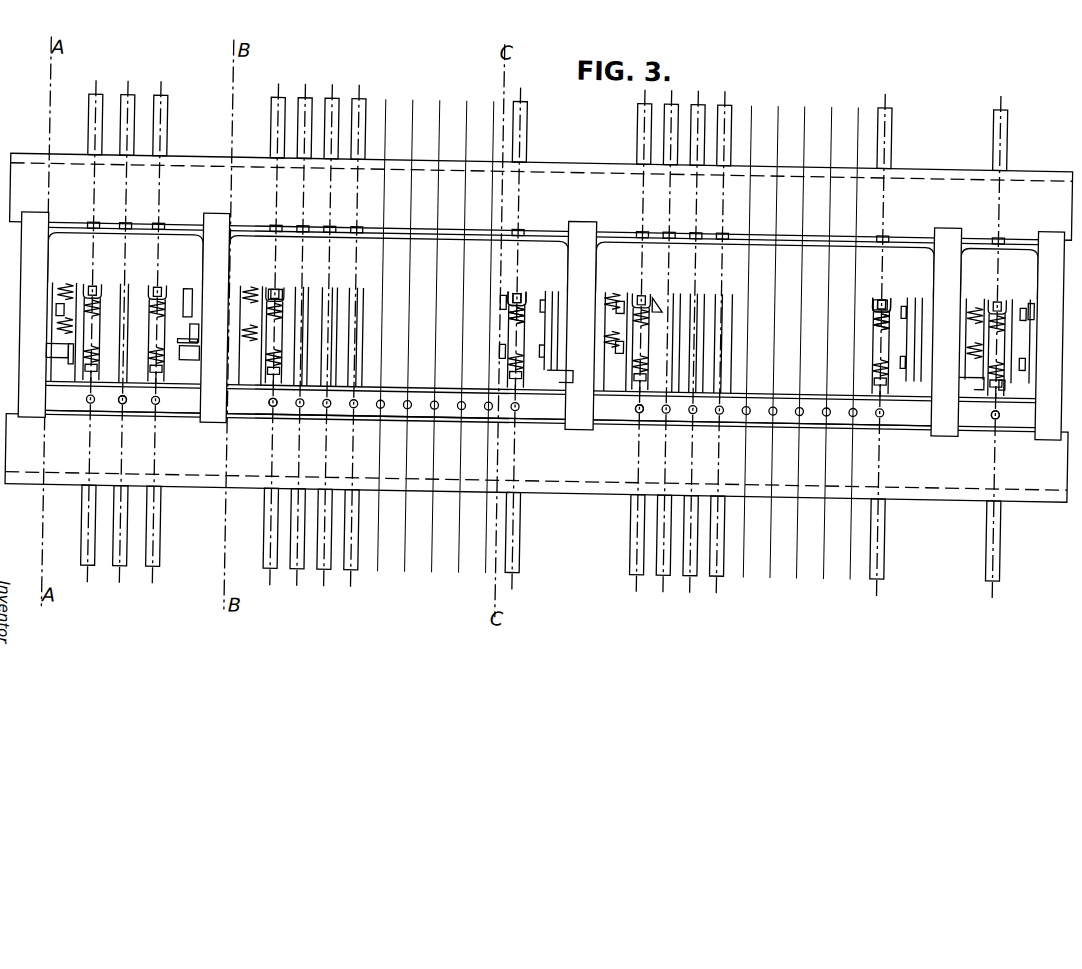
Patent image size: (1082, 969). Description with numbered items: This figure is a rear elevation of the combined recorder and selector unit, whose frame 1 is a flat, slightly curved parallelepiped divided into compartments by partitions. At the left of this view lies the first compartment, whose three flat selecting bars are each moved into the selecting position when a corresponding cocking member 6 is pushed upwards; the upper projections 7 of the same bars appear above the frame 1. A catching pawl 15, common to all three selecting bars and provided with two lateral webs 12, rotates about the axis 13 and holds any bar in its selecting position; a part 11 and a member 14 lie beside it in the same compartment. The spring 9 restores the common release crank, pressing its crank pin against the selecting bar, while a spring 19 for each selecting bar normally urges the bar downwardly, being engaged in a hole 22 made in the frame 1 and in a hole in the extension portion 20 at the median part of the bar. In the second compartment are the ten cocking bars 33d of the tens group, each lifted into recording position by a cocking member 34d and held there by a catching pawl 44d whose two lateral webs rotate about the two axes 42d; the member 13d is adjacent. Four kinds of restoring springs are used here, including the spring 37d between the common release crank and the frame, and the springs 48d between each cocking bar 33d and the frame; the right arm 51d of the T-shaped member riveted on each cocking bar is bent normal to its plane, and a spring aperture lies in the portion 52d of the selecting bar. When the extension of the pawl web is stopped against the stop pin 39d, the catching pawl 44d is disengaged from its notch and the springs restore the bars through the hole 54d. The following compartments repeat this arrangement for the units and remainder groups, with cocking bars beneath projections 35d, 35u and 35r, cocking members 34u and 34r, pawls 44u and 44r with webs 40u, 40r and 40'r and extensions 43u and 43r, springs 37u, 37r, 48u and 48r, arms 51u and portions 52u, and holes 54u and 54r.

The frame 1 is at (33, 172).
The cocking member 6 is at (177, 578).
The upper pins 7 is at (154, 103).
The restoring spring 9 is at (54, 318).
The bracket 11 is at (62, 366).
The lateral web 12 is at (58, 293).
The axis 13 is at (56, 314).
The spring 14 is at (58, 352).
The catching pawl 15 is at (70, 265).
The restoring spring 19 is at (122, 399).
The extension portion 20 is at (124, 292).
The hole 22 is at (121, 411).
The stop 13d is at (196, 330).
The restoring spring 37d is at (186, 366).
The axis 42d is at (233, 305).
The restoring spring 48d is at (262, 300).
The catching pawl 44d is at (285, 296).
The cocking bar 33d is at (362, 356).
The stop pin 39d is at (395, 404).
The hole 54d is at (272, 411).
The head 51d is at (506, 292).
The spring 52d is at (508, 300).
The actuator unit 40u is at (602, 300).
The actuator 48u is at (650, 300).
The bracket 43u is at (600, 355).
The rail 37u is at (762, 410).
The hole 54u is at (640, 411).
The head 51u is at (871, 292).
The spring 52u is at (872, 305).
The rail bracket 37r is at (952, 330).
The head 44u is at (880, 269).
The actuator unit 40r is at (960, 300).
The head 44r is at (1020, 276).
The stop 40'r is at (1053, 318).
The bracket 43r is at (962, 352).
The hole 54r is at (995, 411).
The actuator 48r is at (1003, 385).
The cocking member 34d is at (539, 580).
The lower pins 34u is at (903, 581).
The lower pin 34r is at (1003, 573).
The upper pins 35d is at (533, 91).
The upper pins 35u is at (899, 95).
The upper pin 35r is at (1019, 175).